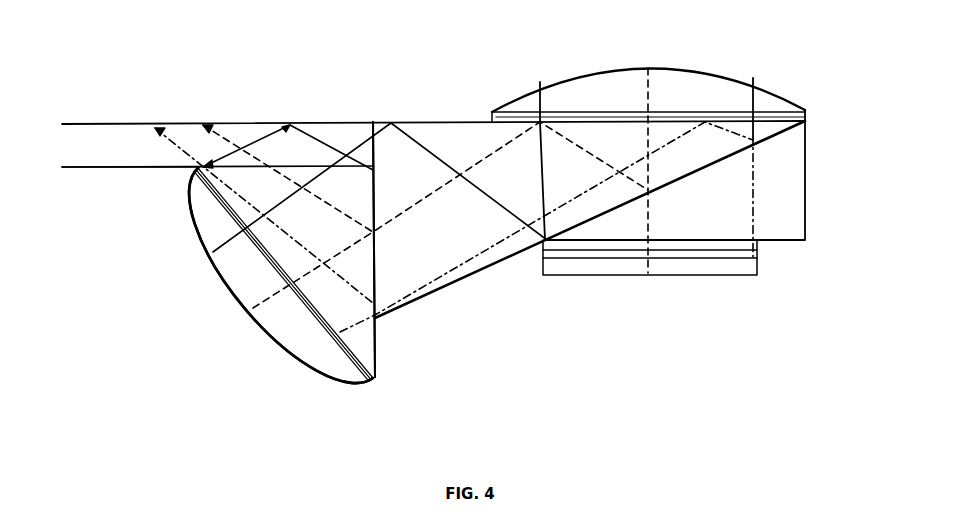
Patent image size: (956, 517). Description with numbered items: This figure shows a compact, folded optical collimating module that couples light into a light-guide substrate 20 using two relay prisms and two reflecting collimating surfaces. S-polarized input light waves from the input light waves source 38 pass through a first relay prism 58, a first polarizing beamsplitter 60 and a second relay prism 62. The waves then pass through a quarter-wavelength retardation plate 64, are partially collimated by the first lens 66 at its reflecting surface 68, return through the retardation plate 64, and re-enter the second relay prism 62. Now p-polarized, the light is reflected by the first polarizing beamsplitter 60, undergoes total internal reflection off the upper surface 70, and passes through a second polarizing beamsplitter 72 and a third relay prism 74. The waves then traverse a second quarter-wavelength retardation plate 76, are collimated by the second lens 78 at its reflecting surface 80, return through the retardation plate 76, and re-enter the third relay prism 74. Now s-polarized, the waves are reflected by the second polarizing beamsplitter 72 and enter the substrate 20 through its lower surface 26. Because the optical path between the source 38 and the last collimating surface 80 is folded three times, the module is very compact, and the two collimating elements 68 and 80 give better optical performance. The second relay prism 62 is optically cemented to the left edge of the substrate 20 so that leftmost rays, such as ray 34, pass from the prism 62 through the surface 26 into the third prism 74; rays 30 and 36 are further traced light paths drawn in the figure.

The substrate 20 is at (117, 152).
The lower surface 26 is at (157, 168).
The light ray 30 is at (283, 177).
The ray 34 is at (313, 130).
The light ray 36 is at (143, 122).
The input light waves source 38 is at (633, 277).
The first relay prism 58 is at (780, 185).
The first polarizing beamsplitter 60 is at (493, 270).
The second relay prism 62 is at (420, 160).
The quarter-wavelength retardation plate 64 is at (475, 117).
The first lens 66 is at (720, 90).
The reflecting surface 68 is at (605, 64).
The upper surface 70 is at (460, 120).
The second polarizing beamsplitter 72 is at (377, 262).
The third relay prism 74 is at (373, 338).
The quarter-wavelength retardation plate 76 is at (375, 375).
The second lens 78 is at (300, 335).
The reflecting surface 80 is at (235, 300).